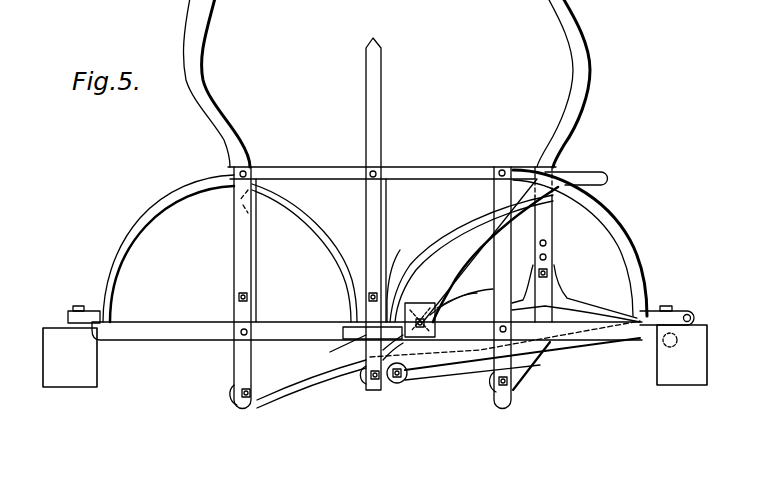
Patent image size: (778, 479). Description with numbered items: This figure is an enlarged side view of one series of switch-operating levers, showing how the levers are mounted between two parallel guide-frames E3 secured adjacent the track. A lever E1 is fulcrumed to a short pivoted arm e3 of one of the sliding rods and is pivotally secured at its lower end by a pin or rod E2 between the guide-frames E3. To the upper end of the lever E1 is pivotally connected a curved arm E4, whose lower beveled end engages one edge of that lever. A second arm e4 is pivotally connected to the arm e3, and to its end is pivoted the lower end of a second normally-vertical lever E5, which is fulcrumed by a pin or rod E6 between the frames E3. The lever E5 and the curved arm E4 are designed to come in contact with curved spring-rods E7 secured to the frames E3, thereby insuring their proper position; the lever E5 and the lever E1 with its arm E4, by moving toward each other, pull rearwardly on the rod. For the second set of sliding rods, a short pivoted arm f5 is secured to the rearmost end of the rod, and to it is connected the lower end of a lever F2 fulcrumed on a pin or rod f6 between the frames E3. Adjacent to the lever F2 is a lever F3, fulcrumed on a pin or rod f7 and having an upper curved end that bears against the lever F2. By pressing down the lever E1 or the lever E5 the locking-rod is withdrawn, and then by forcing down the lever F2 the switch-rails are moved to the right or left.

The curved arm E4 is at (581, 97).
The guide-frames E3 is at (425, 167).
The second normally-vertical lever E5 is at (257, 272).
The lever F2 is at (388, 212).
The pin or rod E2 is at (496, 387).
The pin or rod E6 is at (236, 296).
The curved spring-rods E7 is at (462, 208).
The pin or rod f6 is at (392, 268).
The lever E1 is at (545, 231).
The lever F3 is at (444, 262).
The short pivoted arm e3 is at (588, 302).
The second arm e4 is at (325, 377).
The pin or rod f7 is at (423, 338).
The short pivoted arm f5 is at (473, 372).